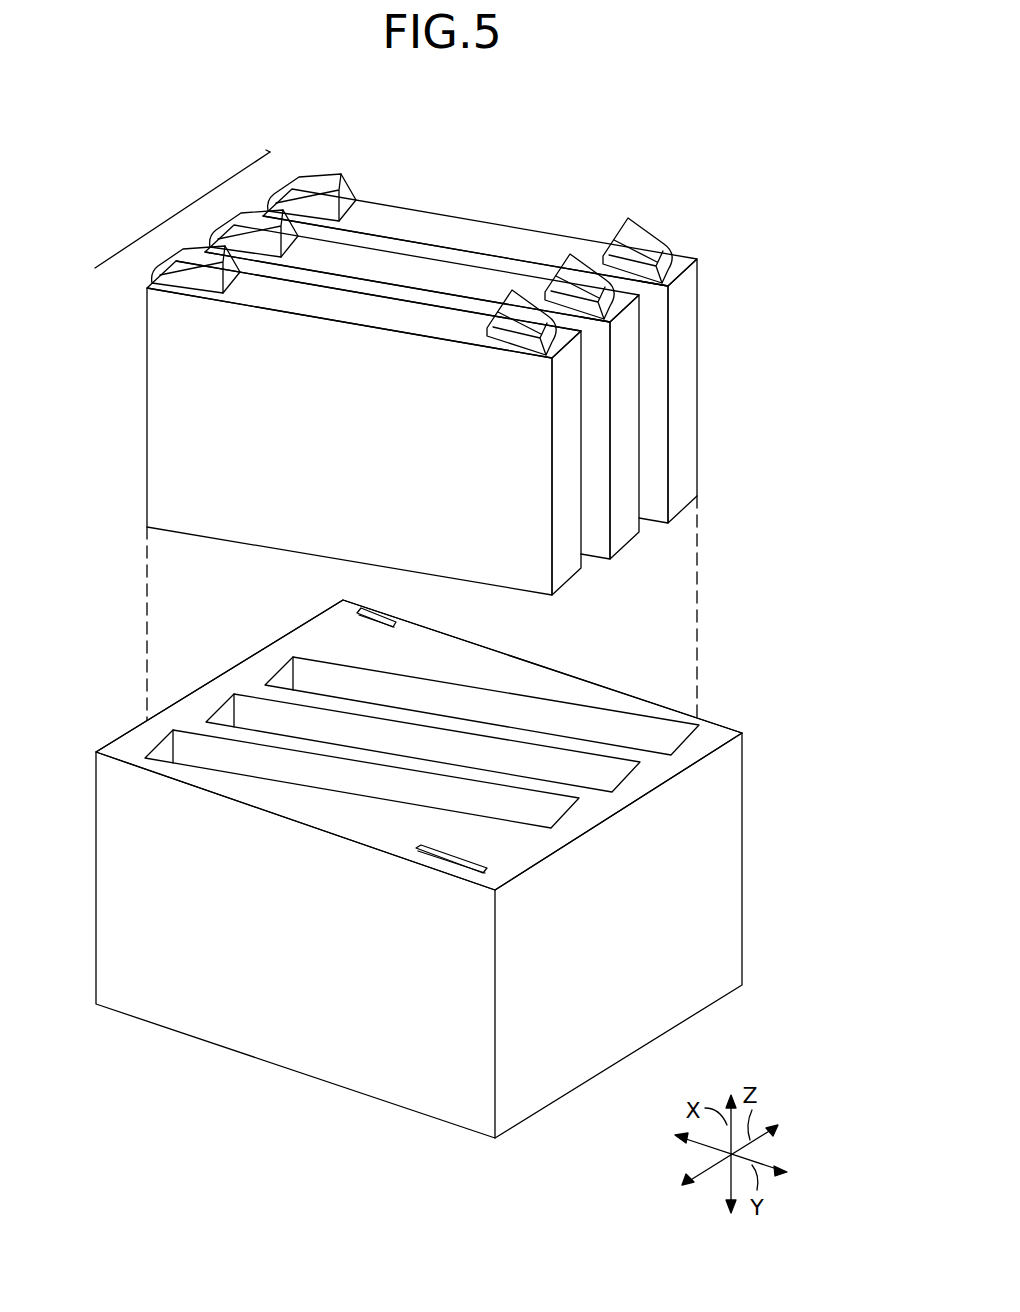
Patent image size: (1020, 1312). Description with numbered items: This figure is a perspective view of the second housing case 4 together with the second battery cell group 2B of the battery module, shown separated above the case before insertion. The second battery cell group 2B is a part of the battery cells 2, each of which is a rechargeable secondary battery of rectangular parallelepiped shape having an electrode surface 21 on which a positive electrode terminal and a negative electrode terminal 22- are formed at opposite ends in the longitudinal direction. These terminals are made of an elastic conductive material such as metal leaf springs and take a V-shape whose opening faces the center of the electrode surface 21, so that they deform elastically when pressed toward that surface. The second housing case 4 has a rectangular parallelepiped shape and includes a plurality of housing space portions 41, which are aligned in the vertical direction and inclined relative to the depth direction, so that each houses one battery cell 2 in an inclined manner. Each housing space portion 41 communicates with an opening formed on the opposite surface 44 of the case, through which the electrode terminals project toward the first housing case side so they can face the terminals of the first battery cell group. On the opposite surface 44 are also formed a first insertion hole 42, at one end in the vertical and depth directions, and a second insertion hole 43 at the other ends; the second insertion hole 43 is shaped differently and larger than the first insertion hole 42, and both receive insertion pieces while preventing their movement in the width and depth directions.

The battery cell 2 is at (590, 400).
The electrode surface 21 is at (327, 302).
The negative electrode terminal 22- is at (190, 255).
The second battery cell group 2B is at (184, 202).
The second housing case 4 is at (756, 848).
The housing space portion 41 is at (488, 800).
The first insertion hole 42 is at (388, 604).
The second insertion hole 43 is at (422, 870).
The opposite surface 44 is at (127, 747).